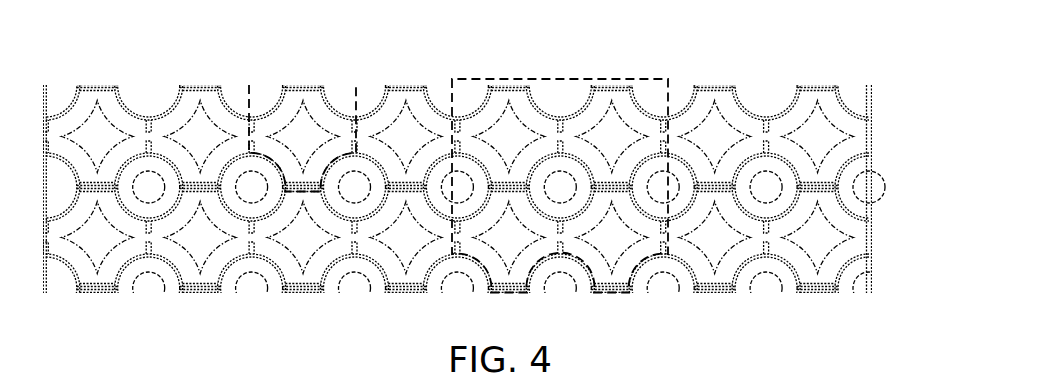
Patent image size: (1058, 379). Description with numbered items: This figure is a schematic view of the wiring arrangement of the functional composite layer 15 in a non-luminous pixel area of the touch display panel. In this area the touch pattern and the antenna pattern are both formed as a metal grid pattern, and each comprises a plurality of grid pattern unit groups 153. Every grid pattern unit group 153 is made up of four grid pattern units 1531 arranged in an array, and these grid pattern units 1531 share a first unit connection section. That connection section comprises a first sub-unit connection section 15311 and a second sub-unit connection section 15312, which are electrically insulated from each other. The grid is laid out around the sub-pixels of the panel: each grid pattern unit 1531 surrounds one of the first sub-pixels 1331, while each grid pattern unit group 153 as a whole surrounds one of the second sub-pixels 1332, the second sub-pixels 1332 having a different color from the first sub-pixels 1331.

The functional composite layer 15 is at (405, 88).
The grid pattern unit group 153 is at (518, 77).
The grid pattern unit 1531 is at (337, 83).
The first sub-unit connection section 15311 is at (765, 120).
The second sub-unit connection section 15312 is at (662, 143).
The first sub-pixel 1331 is at (828, 127).
The second sub-pixel 1332 is at (868, 175).